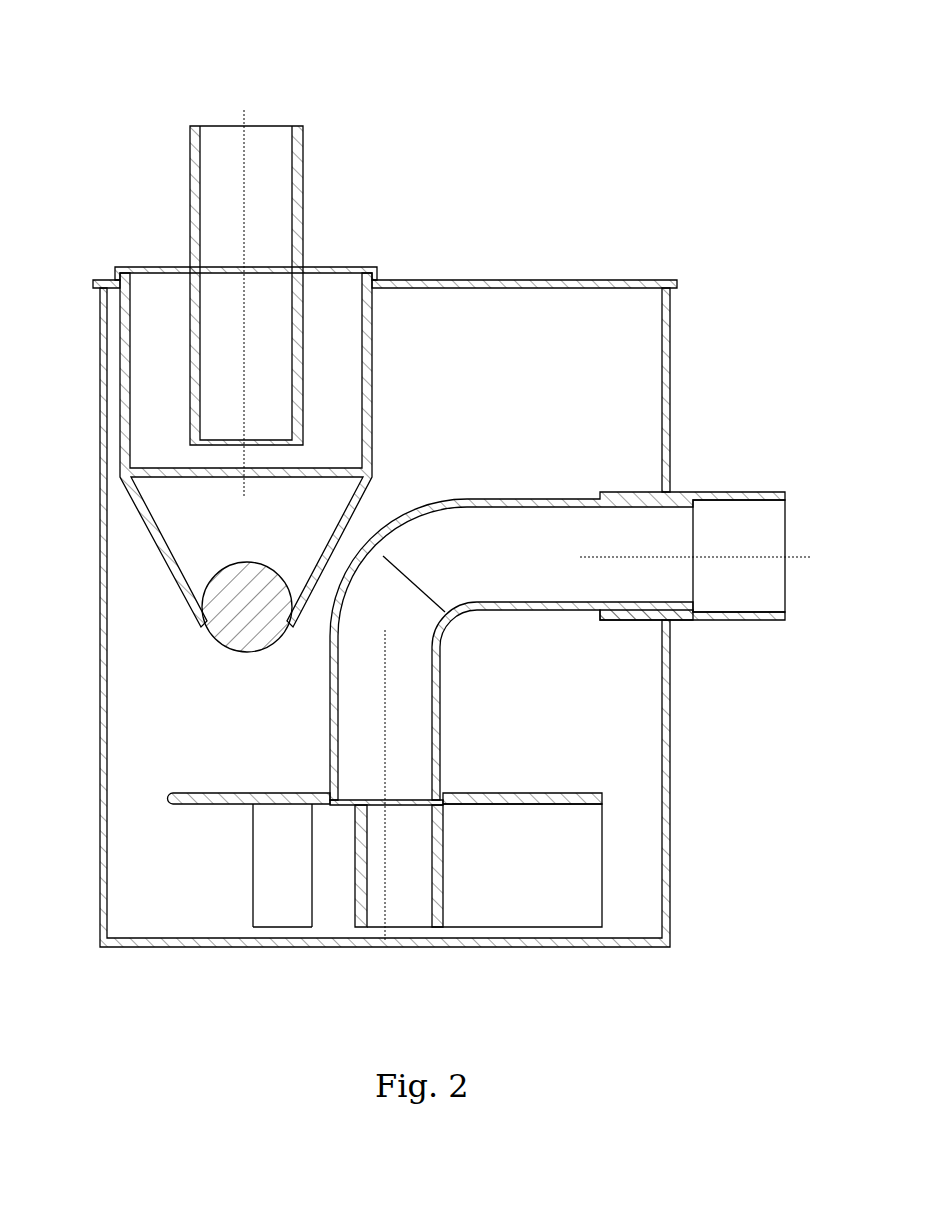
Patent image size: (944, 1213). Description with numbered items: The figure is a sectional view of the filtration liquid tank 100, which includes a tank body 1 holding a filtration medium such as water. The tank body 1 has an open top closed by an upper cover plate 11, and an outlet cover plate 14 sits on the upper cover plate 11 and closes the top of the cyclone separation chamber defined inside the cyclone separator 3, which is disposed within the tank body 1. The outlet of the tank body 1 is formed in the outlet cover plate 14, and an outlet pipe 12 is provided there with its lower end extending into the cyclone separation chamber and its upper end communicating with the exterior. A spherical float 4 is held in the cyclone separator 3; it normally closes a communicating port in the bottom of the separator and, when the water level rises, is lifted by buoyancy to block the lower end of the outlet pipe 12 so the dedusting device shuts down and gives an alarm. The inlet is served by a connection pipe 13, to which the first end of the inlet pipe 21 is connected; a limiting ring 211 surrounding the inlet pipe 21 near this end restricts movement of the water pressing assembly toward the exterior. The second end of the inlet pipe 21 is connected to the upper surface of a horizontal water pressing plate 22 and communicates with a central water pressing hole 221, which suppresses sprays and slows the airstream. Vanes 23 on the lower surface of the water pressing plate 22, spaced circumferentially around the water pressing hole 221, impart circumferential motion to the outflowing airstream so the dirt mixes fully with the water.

The filtration liquid tank 100 is at (610, 108).
The tank body 1 is at (648, 925).
The upper cover plate 11 is at (603, 278).
The outlet pipe 12 is at (273, 217).
The connection pipe 13 is at (735, 599).
The outlet cover plate 14 is at (333, 277).
The cyclone separator 3 is at (122, 420).
The float 4 is at (235, 625).
The inlet pipe 21 is at (510, 522).
The limiting ring 211 is at (616, 608).
The water pressing plate 22 is at (218, 805).
The water pressing hole 221 is at (415, 797).
The vane 23 is at (442, 900).